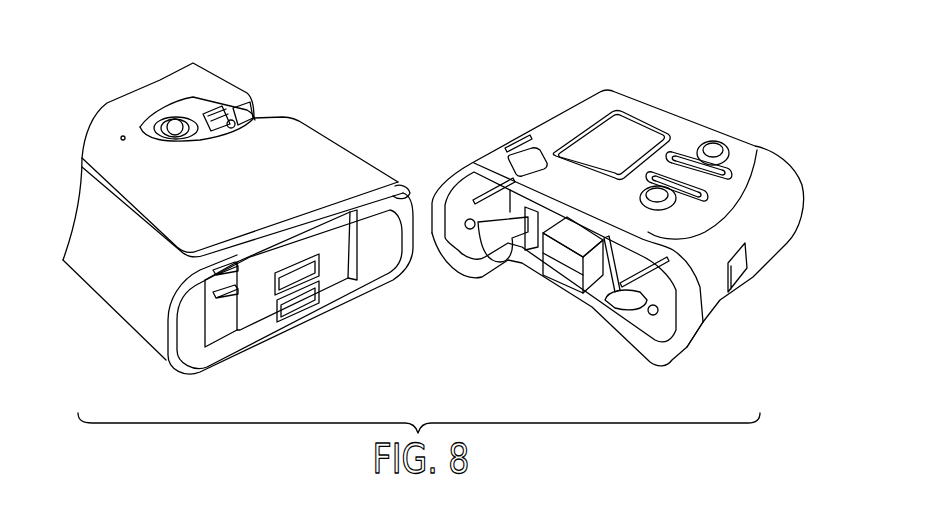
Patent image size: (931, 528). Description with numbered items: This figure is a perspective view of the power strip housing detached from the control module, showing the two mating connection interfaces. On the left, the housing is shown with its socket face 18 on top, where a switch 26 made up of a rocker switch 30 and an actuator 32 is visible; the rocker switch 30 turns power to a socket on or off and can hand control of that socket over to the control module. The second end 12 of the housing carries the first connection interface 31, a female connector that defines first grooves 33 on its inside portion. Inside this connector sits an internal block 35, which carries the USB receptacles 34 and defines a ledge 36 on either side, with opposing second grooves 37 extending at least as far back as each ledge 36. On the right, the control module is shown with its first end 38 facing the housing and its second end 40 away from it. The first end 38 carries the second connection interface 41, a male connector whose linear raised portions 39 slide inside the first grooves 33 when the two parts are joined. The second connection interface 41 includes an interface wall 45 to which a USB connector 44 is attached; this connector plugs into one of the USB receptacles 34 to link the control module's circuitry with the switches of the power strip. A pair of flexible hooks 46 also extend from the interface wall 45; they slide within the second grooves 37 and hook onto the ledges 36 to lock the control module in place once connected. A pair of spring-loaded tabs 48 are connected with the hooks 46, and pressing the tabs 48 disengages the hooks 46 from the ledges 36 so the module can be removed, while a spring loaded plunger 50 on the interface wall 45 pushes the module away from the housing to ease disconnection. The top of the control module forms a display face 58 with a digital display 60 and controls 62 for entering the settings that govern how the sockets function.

The second end 12 is at (377, 290).
The socket face 18 is at (350, 180).
The switch 26 is at (192, 97).
The rocker switch 30 is at (241, 110).
The first connection interface 31 is at (203, 332).
The actuator 32 is at (177, 125).
The first grooves 33 is at (404, 190).
The USB receptacle 34 is at (273, 268).
The internal block 35 is at (335, 268).
The ledge 36 is at (200, 280).
The second grooves 37 is at (223, 293).
The first end 38 is at (613, 360).
The linear raised portions 39 is at (465, 181).
The second end 40 is at (777, 163).
The second connection interface 41 is at (637, 342).
The USB connector 44 is at (570, 237).
The interface wall 45 is at (615, 258).
The flexible hook 46 is at (487, 243).
The spring-loaded tab 48 is at (510, 147).
The spring loaded plunger 50 is at (550, 270).
The display face 58 is at (687, 133).
The digital display 60 is at (630, 137).
The controls 62 is at (710, 162).